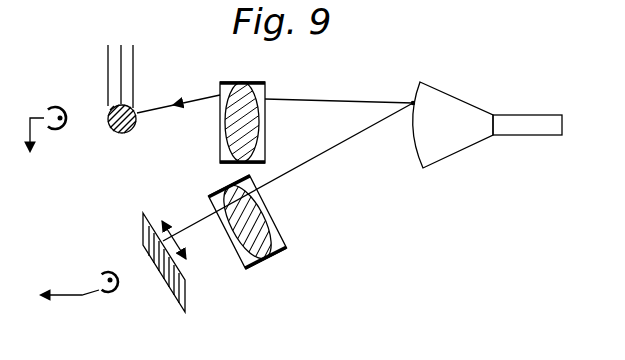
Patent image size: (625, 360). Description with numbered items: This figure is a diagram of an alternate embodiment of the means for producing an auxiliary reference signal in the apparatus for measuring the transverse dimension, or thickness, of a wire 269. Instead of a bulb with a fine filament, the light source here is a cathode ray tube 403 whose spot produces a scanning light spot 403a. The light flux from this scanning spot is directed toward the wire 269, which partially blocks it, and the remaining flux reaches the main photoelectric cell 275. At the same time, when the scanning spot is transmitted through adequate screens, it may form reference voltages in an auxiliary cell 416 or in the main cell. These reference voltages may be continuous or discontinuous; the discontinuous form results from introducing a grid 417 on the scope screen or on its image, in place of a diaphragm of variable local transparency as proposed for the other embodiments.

The wire 269 is at (118, 132).
The photoelectric cell 275 is at (50, 106).
The cathode ray tube 403 is at (479, 143).
The scanning light spot 403a is at (396, 91).
The auxiliary cell 416 is at (104, 297).
The grid 417 is at (186, 296).